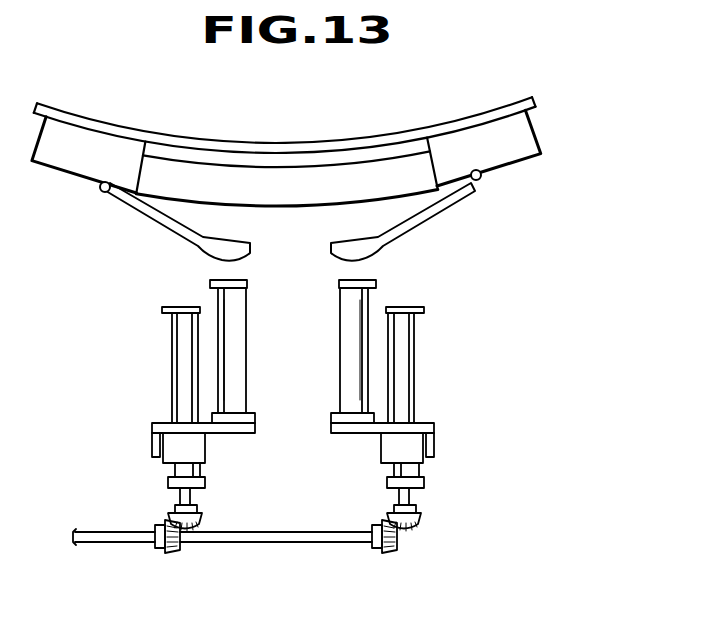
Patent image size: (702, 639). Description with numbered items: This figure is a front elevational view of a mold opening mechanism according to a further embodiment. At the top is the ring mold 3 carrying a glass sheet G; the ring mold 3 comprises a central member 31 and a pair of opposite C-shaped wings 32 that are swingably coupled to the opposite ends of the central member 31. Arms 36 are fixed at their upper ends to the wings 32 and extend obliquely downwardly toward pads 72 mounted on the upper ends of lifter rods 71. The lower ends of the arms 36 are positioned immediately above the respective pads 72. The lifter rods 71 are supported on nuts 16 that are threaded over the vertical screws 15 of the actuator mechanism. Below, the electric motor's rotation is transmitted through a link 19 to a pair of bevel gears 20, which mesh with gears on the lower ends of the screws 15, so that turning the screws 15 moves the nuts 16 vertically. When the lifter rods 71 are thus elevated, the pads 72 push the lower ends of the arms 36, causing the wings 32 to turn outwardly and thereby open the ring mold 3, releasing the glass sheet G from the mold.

The ring mold 3 is at (259, 188).
The glass sheet G is at (329, 150).
The central member 31 is at (192, 170).
The C-shaped wings 32 is at (65, 160).
The arms 36 is at (154, 217).
The vertical screws 15 is at (177, 330).
The pads 72 is at (249, 282).
The lifter rods 71 is at (235, 370).
The nuts 16 is at (178, 445).
The bevel gears 20 is at (173, 550).
The link 19 is at (102, 537).